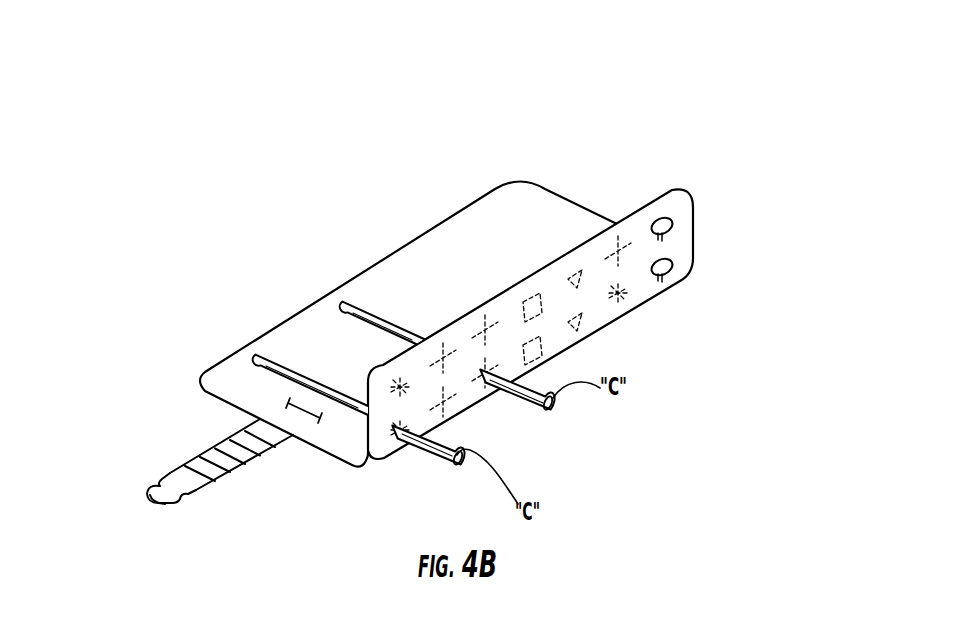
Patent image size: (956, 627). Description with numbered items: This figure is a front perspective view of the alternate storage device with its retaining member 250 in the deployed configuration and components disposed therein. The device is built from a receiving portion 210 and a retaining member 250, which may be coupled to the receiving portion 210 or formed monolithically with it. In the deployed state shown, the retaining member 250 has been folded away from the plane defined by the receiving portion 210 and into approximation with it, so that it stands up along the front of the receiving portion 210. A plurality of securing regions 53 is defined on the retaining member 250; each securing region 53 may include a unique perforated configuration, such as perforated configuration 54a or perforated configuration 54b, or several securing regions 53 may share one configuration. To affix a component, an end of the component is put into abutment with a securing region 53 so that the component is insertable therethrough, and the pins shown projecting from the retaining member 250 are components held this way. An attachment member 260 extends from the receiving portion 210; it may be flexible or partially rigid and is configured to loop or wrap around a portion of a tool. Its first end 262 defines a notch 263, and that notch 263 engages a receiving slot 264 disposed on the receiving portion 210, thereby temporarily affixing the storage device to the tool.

The receiving portion 210 is at (521, 196).
The retaining member 250 is at (690, 208).
The securing region 53 is at (667, 208).
The perforated configuration 54a is at (493, 373).
The perforated configuration 54b is at (392, 435).
The attachment member 260 is at (152, 485).
The first end 262 is at (168, 506).
The notch 263 is at (198, 498).
The receiving slot 264 is at (262, 392).